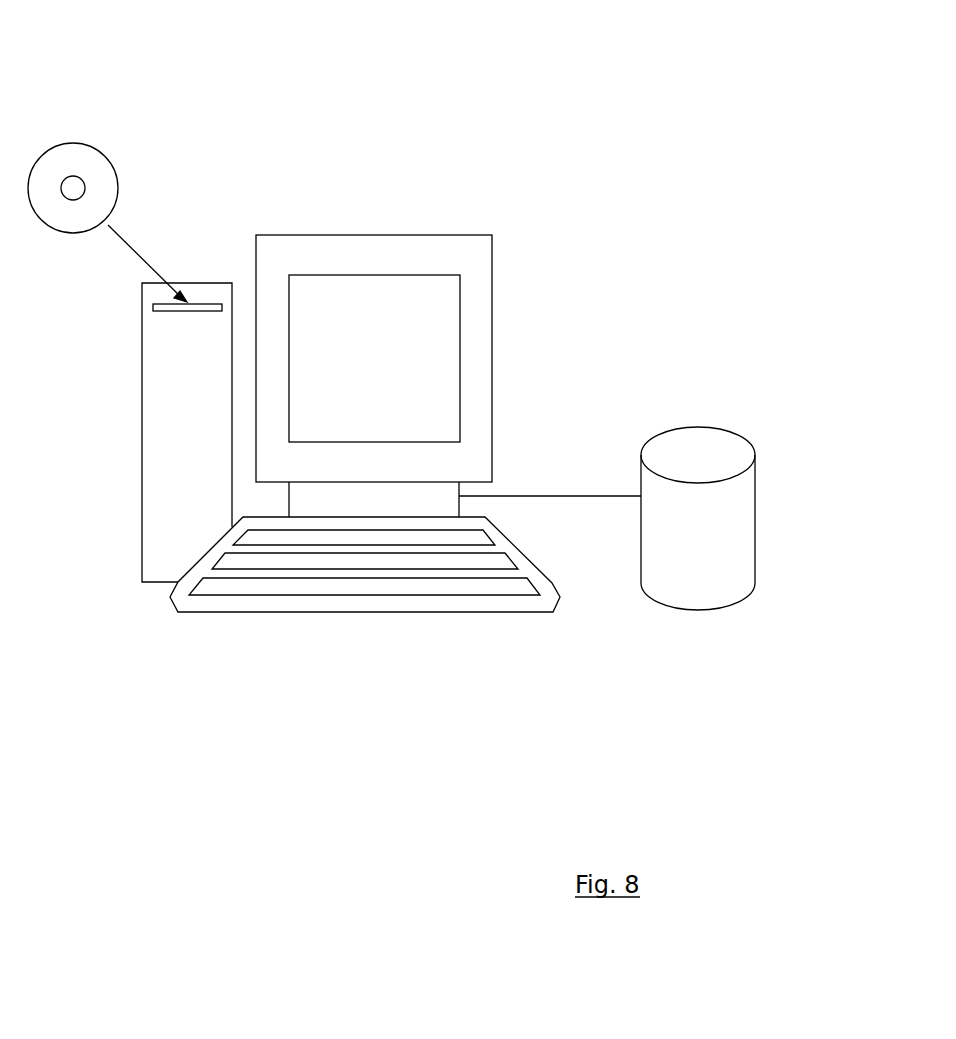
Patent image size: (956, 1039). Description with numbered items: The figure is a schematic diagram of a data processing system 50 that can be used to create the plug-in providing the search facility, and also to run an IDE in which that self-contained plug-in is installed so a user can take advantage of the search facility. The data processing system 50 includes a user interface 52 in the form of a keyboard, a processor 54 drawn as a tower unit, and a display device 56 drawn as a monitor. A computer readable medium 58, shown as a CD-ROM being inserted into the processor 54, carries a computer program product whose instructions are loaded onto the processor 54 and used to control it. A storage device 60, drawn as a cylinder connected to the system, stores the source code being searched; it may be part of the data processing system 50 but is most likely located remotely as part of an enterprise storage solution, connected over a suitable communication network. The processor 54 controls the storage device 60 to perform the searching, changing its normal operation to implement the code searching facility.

The data processing system 50 is at (530, 113).
The user interface 52 is at (167, 603).
The processor 54 is at (142, 417).
The display device 56 is at (493, 303).
The computer readable medium 58 is at (118, 178).
The storage device 60 is at (697, 610).